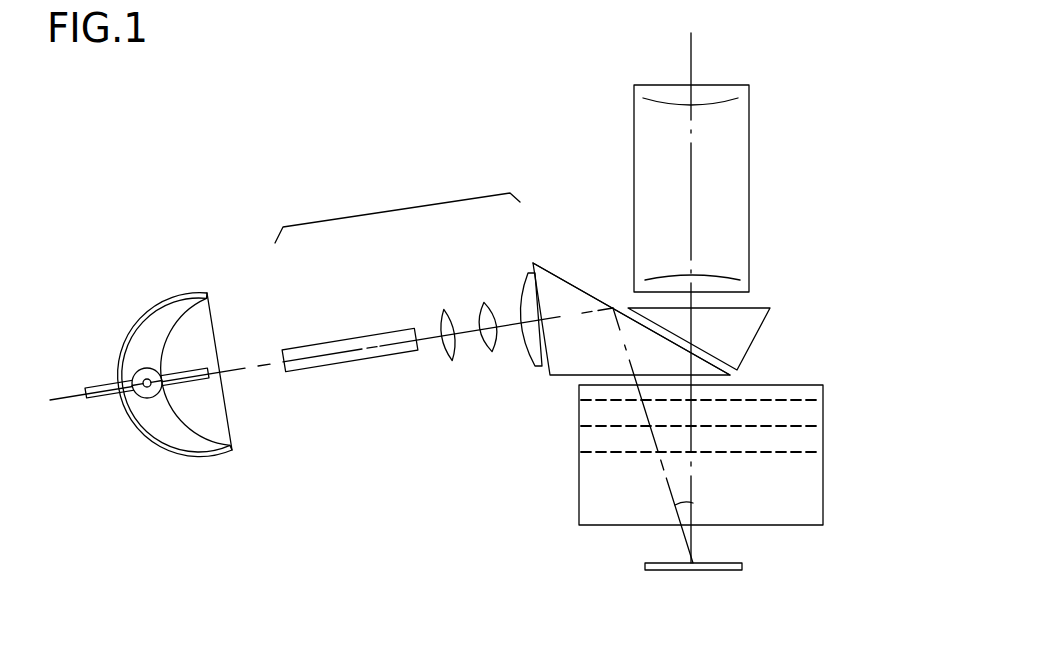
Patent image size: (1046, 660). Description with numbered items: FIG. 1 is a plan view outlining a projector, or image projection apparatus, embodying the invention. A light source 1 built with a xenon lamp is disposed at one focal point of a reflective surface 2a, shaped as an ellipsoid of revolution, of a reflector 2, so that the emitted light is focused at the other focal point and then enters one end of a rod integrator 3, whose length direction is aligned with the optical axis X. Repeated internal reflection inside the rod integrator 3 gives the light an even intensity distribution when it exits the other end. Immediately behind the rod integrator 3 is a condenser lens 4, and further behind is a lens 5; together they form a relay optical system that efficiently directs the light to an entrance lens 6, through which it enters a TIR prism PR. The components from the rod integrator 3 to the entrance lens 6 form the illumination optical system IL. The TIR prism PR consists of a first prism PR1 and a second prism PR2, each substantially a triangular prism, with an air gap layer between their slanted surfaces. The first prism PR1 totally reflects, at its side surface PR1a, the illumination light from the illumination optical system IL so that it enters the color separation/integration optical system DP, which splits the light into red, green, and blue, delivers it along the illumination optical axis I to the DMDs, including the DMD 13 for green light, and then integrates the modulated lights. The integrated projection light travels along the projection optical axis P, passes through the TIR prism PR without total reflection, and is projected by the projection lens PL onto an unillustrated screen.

The light source 1 is at (147, 368).
The reflector 2 is at (178, 296).
The reflective surface 2a is at (181, 328).
The rod integrator 3 is at (347, 335).
The condenser lens 4 is at (445, 308).
The lens 5 is at (485, 300).
The entrance lens 6 is at (525, 282).
The DMD for green light 13 is at (700, 571).
The illumination optical system IL is at (397, 213).
The optical axis X is at (254, 368).
The TIR prism PR is at (782, 297).
The first prism PR1 is at (570, 352).
The side surface PR1a is at (580, 285).
The second prism PR2 is at (743, 327).
The projection lens PL is at (728, 175).
The projection optical axis P is at (691, 63).
The color separation/integration optical system DP is at (547, 523).
The illumination optical axis I is at (667, 485).